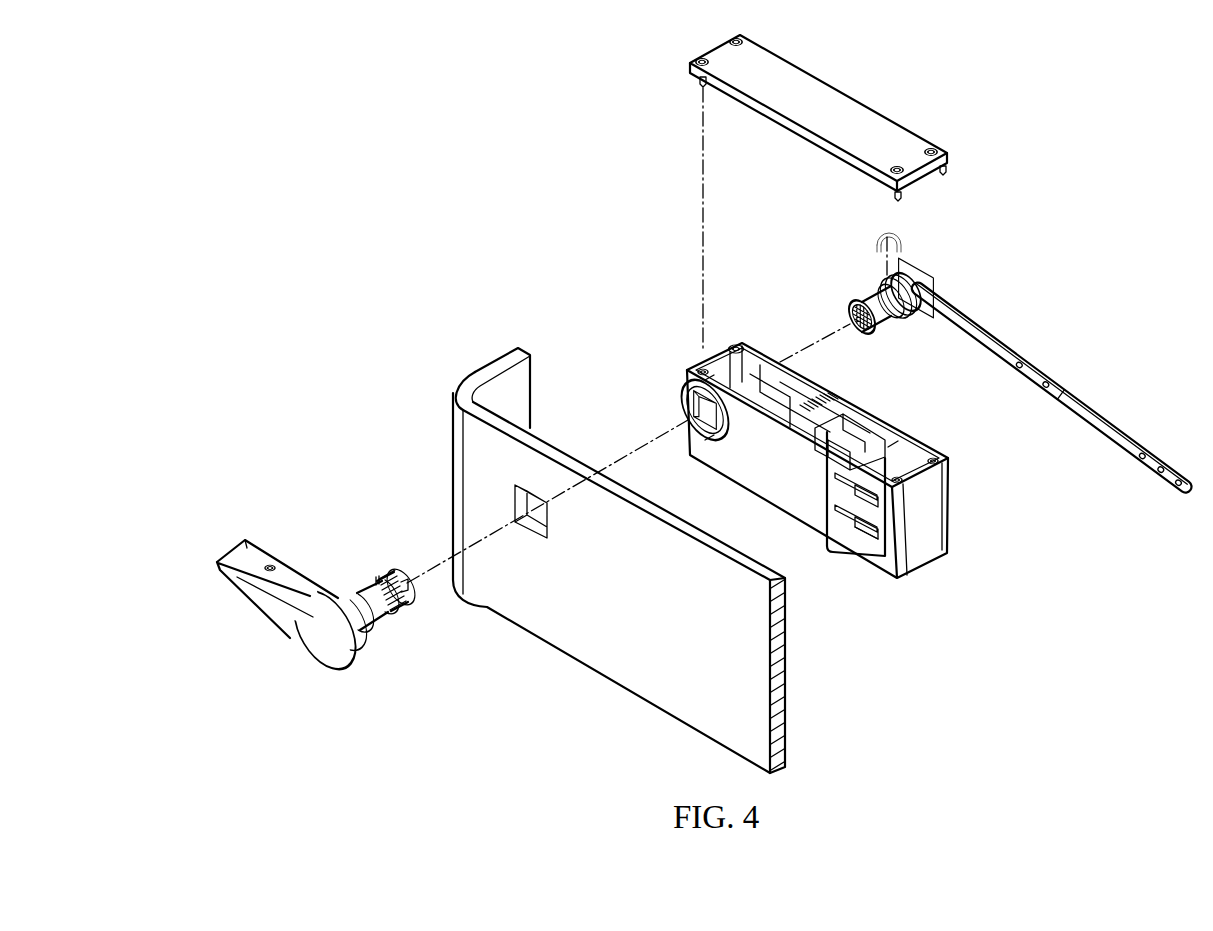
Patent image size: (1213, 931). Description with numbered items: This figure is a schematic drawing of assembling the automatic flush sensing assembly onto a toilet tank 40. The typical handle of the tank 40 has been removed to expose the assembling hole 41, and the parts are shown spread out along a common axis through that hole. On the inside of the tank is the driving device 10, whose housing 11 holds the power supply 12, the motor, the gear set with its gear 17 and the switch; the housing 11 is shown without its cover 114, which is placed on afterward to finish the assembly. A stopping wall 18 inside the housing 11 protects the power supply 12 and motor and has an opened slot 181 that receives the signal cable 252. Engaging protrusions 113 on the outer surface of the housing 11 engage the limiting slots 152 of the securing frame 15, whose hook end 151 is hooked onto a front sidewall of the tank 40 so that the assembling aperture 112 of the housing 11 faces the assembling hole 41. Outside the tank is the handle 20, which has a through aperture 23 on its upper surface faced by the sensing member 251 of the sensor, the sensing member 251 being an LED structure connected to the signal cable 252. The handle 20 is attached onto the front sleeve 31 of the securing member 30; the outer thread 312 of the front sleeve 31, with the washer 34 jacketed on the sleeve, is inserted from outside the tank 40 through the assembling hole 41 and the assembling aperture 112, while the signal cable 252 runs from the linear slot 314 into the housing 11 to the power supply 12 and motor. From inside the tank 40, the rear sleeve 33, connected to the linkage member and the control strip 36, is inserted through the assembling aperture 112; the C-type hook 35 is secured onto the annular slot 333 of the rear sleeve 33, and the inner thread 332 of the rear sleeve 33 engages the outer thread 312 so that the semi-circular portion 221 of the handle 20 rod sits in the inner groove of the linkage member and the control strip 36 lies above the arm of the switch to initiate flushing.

The driving device 10 is at (826, 456).
The housing 11 is at (940, 517).
The power supply 12 is at (903, 449).
The securing frame 15 is at (891, 526).
The gear 17 is at (775, 432).
The stopping wall 18 is at (765, 395).
The handle 20 is at (342, 614).
The through aperture 23 is at (257, 578).
The securing member 30 is at (990, 338).
The front sleeve 31 is at (406, 606).
The rear sleeve 33 is at (919, 306).
The washer 34 is at (698, 405).
The C-type hook 35 is at (905, 234).
The control strip 36 is at (1012, 356).
The toilet tank 40 is at (568, 537).
The assembling hole 41 is at (518, 486).
The assembling aperture 112 is at (755, 350).
The engaging protrusions 113 is at (865, 540).
The cover 114 is at (877, 124).
The hook end 151 is at (895, 440).
The limiting slots 152 is at (838, 520).
The opened slot 181 is at (740, 345).
The semi-circular portion 221 is at (406, 600).
The sensing member 251 is at (272, 566).
The signal cable 252 is at (377, 576).
The outer thread 312 is at (398, 610).
The linear slot 314 is at (353, 594).
The inner thread 332 is at (849, 308).
The annular slot 333 is at (917, 318).